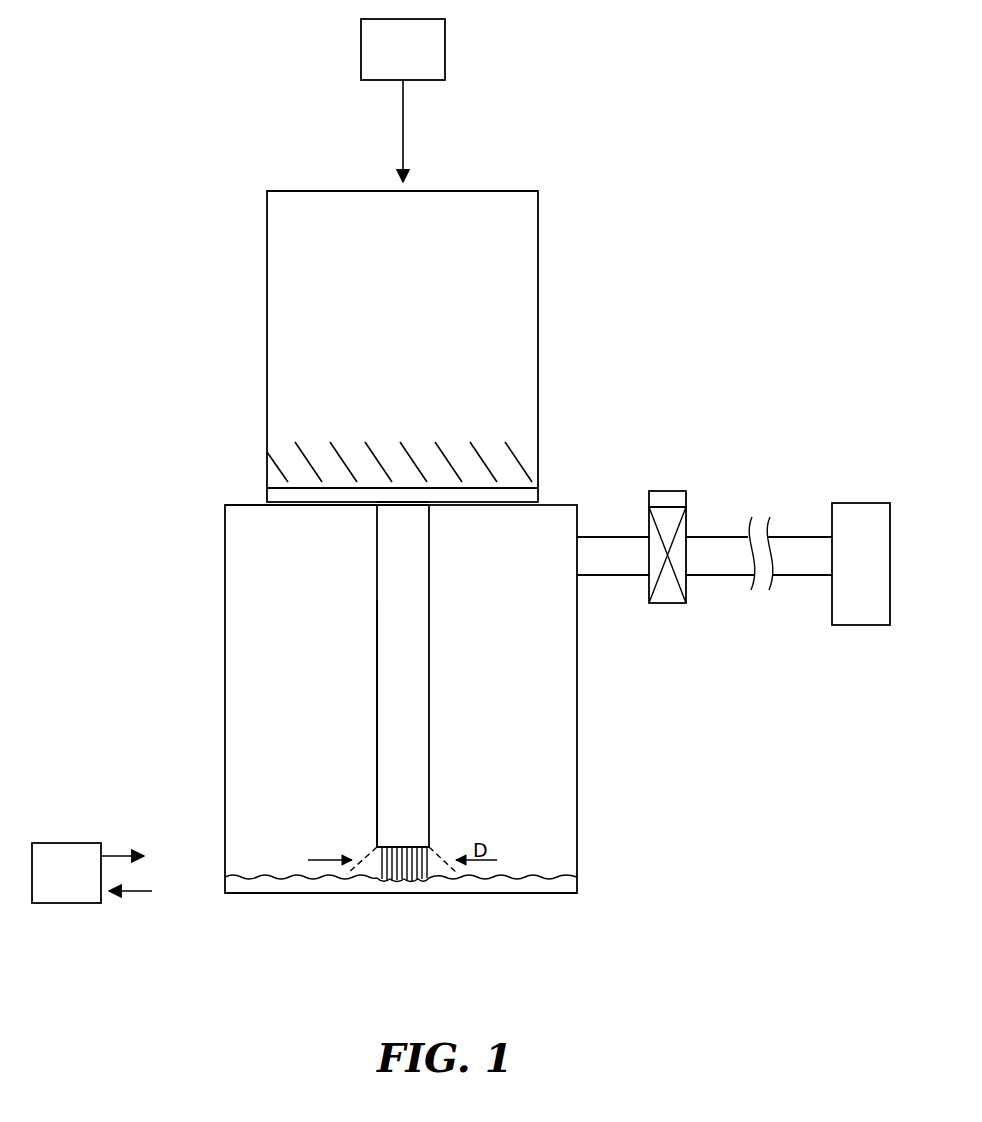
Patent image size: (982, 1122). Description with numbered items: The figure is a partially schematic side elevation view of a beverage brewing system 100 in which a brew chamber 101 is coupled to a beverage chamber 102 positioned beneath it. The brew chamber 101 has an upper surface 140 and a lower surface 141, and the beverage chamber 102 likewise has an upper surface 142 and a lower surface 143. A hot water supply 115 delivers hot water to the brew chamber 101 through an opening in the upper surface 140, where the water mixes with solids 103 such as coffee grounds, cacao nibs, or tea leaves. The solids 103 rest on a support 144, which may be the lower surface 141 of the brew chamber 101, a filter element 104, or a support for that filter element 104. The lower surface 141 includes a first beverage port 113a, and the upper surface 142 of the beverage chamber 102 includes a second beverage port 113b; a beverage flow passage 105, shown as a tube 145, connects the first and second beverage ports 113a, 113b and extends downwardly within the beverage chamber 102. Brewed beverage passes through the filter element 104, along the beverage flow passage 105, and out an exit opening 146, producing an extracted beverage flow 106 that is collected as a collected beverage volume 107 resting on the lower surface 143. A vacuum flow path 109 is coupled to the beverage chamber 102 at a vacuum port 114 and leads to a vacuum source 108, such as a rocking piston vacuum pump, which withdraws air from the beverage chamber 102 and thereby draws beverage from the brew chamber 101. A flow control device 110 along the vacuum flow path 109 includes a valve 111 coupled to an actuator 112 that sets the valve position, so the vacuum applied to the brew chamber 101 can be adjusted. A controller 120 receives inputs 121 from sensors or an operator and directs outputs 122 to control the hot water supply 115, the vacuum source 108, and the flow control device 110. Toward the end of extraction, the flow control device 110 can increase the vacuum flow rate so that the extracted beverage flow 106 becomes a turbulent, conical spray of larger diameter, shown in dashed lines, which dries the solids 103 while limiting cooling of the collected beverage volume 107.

The beverage brewing system 100 is at (768, 114).
The brew chamber 101 is at (538, 242).
The beverage chamber 102 is at (577, 797).
The solids 103 is at (318, 457).
The filter element 104 is at (540, 497).
The beverage flow passage 105 is at (429, 690).
The extracted beverage flow 106 is at (445, 838).
The collected beverage volume 107 is at (538, 887).
The vacuum source 108 is at (866, 503).
The vacuum flow path 109 is at (617, 537).
The flow control device 110 is at (724, 616).
The valve 111 is at (650, 590).
The actuator 112 is at (686, 500).
The first beverage port 113a is at (415, 506).
The second beverage port 113b is at (398, 503).
The vacuum port 114 is at (578, 552).
The hot water supply 115 is at (445, 48).
The controller 120 is at (72, 843).
The inputs 121 is at (132, 895).
The outputs 122 is at (127, 852).
The upper surface 140 is at (308, 190).
The lower surface 141 is at (350, 507).
The upper surface 142 is at (247, 503).
The lower surface 143 is at (272, 887).
The support 144 is at (478, 478).
The tube 145 is at (377, 757).
The exit opening 146 is at (417, 877).